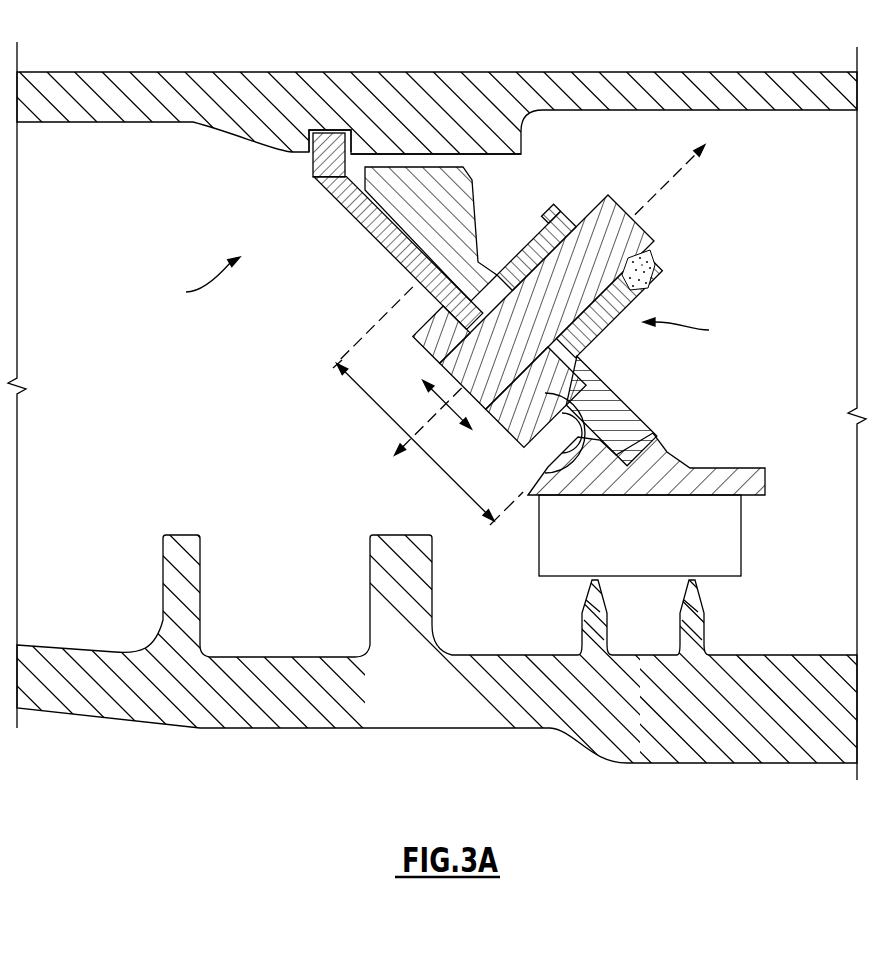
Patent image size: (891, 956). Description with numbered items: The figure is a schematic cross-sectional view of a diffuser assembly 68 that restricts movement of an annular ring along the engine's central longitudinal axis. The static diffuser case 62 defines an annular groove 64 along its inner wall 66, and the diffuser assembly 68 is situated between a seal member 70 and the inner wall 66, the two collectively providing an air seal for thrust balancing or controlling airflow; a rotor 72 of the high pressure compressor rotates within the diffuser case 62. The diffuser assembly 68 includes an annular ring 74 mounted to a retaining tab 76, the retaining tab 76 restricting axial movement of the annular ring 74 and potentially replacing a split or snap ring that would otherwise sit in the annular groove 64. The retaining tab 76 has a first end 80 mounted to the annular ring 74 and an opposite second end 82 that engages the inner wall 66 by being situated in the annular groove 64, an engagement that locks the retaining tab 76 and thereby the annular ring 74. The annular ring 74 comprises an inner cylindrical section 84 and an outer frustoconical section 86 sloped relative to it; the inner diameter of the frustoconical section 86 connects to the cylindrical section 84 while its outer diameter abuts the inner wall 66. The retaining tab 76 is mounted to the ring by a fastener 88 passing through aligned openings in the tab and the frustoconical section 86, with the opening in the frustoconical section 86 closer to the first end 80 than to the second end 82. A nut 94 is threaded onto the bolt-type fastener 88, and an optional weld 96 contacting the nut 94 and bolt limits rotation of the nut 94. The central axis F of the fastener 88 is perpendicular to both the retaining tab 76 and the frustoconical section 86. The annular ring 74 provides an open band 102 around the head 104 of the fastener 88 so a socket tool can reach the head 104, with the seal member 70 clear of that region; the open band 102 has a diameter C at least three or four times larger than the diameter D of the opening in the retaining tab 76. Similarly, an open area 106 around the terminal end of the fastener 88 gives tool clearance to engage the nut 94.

The diffuser case 62 is at (146, 83).
The annular groove 64 is at (323, 133).
The inner wall 66 is at (417, 141).
The diffuser assembly 68 is at (195, 284).
The seal member 70 is at (728, 548).
The rotor 72 is at (116, 704).
The annular ring 74 is at (608, 372).
The retaining tab 76 is at (389, 273).
The first end 80 is at (560, 453).
The second end 82 is at (313, 163).
The inner cylindrical section 84 is at (752, 483).
The outer frustoconical section 86 is at (475, 283).
The fastener 88 is at (413, 355).
The nut 94 is at (543, 233).
The weld 96 is at (652, 272).
The open band 102 is at (499, 498).
The head 104 is at (435, 330).
The open area 106 is at (702, 330).
The diameter of the open band C is at (387, 413).
The diameter of the opening in the retaining tab D is at (450, 415).
The central axis of the fastener F is at (672, 175).